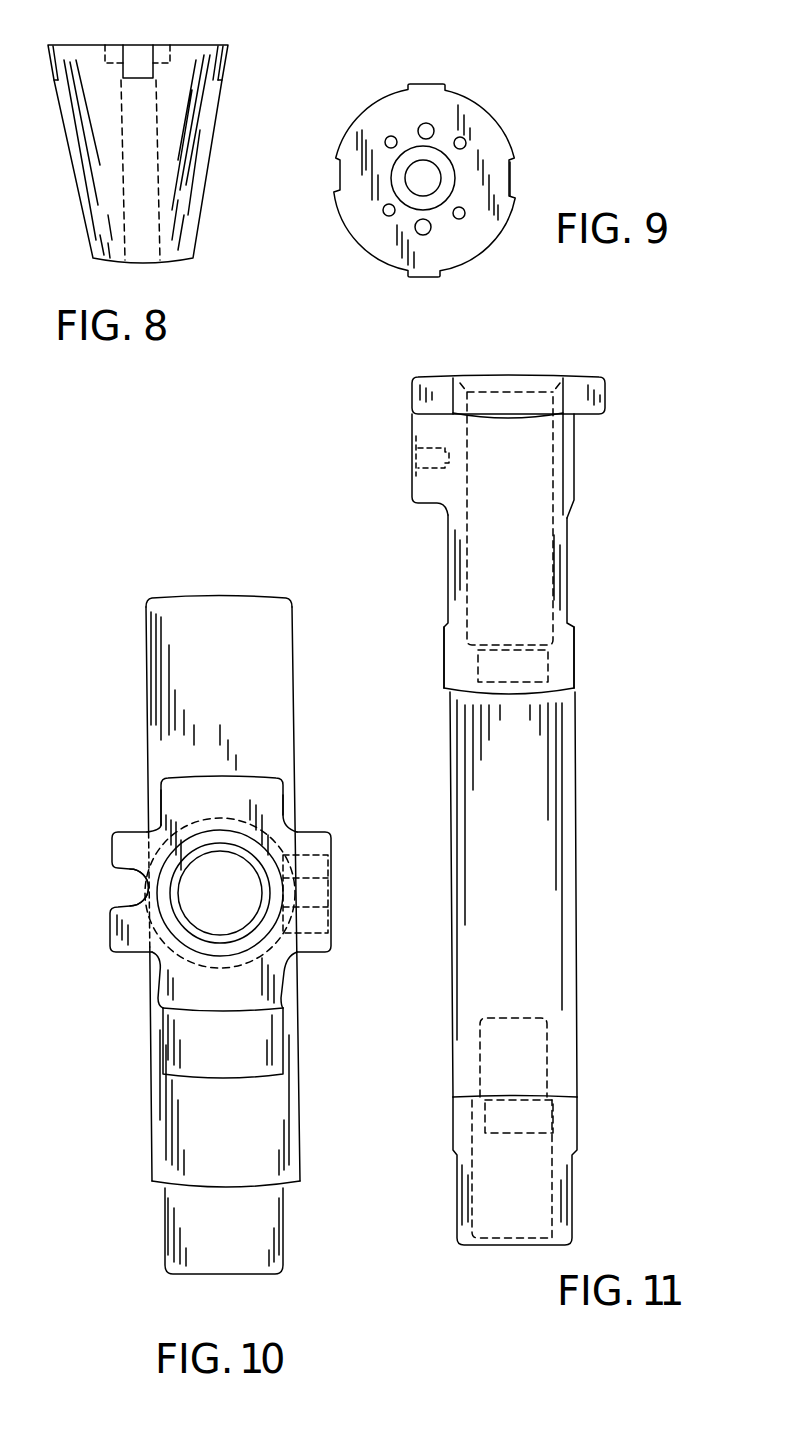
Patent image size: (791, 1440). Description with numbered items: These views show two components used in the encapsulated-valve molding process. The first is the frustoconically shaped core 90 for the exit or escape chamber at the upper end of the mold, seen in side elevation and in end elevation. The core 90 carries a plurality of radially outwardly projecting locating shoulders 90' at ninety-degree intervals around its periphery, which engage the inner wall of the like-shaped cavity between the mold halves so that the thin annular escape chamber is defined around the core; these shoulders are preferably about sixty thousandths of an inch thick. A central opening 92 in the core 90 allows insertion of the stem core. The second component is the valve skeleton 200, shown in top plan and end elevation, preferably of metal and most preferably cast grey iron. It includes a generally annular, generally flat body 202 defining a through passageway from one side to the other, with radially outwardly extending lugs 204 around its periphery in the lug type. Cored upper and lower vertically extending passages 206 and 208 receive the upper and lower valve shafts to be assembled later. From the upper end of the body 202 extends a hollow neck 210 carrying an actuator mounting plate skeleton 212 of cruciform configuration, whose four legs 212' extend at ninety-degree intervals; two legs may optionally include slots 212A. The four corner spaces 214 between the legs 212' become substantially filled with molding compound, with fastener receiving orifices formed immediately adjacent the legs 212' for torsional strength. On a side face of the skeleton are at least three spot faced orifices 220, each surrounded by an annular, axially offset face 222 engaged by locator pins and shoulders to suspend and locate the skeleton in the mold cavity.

In FIG. 8, the core 90 is at (164, 154).
In FIG. 9, the core 90 is at (432, 182).
In FIG. 8, the locating shoulders 90' is at (198, 139).
In FIG. 9, the locating shoulders 90' is at (540, 173).
In FIG. 9, the central opening 92 is at (440, 178).
In FIG. 10, the valve skeleton 200 is at (338, 662).
In FIG. 11, the valve skeleton 200 is at (652, 394).
In FIG. 10, the body 202 is at (295, 1105).
In FIG. 10, the lugs 204 is at (279, 1247).
In FIG. 11, the upper vertically extending passage 206 is at (580, 633).
In FIG. 11, the lower vertically extending passage 208 is at (545, 1062).
In FIG. 11, the hollow neck 210 is at (575, 465).
In FIG. 10, the actuator mounting plate skeleton 212 is at (240, 927).
In FIG. 11, the actuator mounting plate skeleton 212 is at (508, 376).
In FIG. 10, the legs 212' is at (239, 792).
In FIG. 10, the slots 212A is at (128, 880).
In FIG. 10, the corner spaces 214 is at (300, 822).
In FIG. 11, the spot faced orifices 220 is at (412, 455).
In FIG. 11, the annular, axially offset face 222 is at (412, 430).